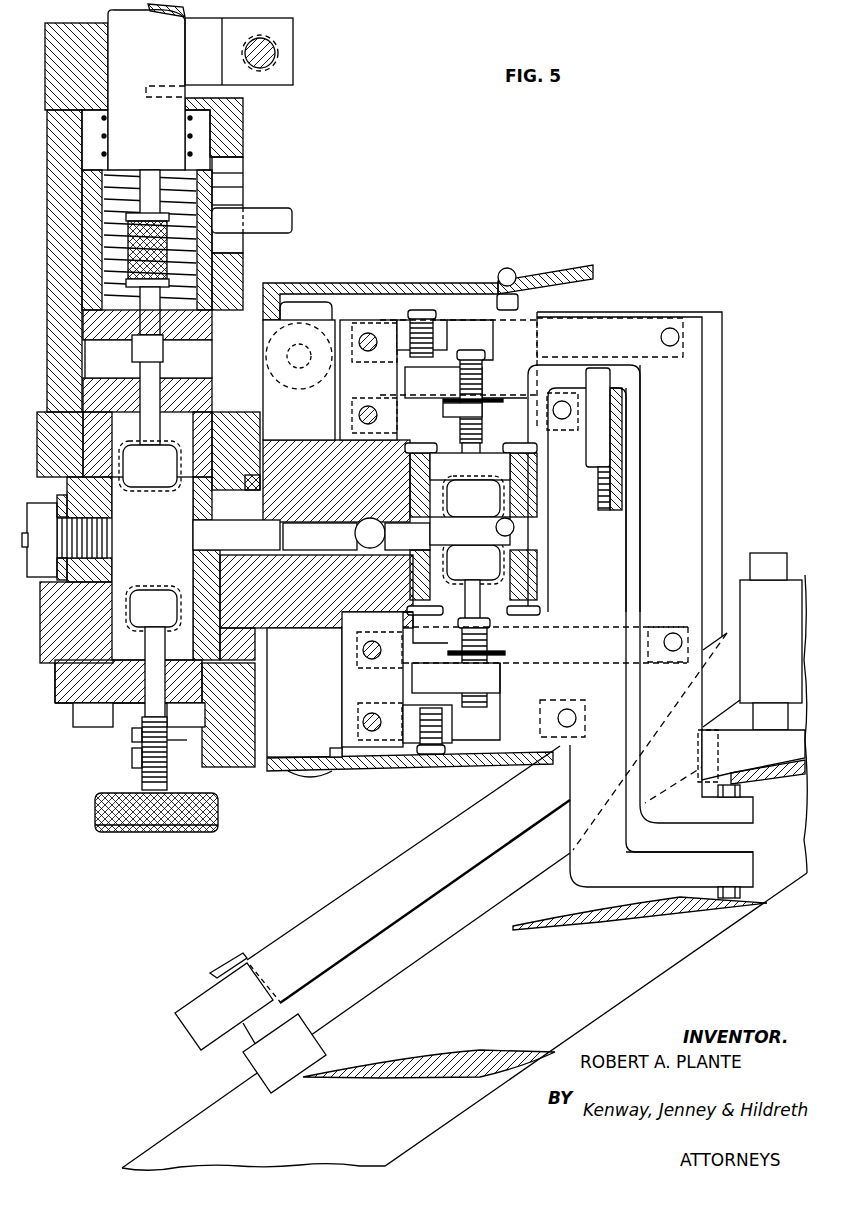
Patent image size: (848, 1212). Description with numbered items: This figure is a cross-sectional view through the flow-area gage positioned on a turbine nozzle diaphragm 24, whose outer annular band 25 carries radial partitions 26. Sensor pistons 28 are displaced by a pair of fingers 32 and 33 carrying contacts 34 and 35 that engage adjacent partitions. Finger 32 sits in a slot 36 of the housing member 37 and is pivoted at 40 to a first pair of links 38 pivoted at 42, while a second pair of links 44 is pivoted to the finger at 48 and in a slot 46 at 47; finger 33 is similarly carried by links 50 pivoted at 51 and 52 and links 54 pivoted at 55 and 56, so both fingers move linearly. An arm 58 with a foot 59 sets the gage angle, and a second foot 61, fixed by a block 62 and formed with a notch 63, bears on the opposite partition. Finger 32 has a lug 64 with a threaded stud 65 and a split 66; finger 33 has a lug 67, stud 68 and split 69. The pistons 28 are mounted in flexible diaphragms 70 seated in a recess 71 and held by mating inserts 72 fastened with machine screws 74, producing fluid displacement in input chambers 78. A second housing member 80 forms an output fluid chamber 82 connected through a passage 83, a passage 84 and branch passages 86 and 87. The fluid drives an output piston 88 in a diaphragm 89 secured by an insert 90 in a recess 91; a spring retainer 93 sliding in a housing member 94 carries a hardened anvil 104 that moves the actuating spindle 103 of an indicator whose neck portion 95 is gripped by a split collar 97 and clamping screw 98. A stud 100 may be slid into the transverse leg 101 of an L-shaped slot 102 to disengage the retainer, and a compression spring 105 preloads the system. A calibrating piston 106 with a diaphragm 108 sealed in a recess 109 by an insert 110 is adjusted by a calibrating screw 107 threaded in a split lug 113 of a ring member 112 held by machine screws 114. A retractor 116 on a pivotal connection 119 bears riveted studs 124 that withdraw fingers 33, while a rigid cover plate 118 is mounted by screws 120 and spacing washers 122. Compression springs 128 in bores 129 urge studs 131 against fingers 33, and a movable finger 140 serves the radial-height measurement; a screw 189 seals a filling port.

The turbine nozzle diaphragm 24 is at (176, 1120).
The outer annular band 25 is at (415, 1128).
The radial partitions 26 is at (767, 800).
The sensor pistons 28 is at (487, 507).
The finger 32 is at (608, 815).
The finger 33 is at (682, 765).
The contact 34 is at (740, 890).
The contact 35 is at (740, 790).
The slot 36 is at (360, 612).
The housing member 37 is at (305, 612).
The first pair of links 38 is at (585, 700).
The pivot 40 is at (569, 709).
The pivot 42 is at (365, 712).
The second pair of links 44 is at (548, 430).
The slot 46 is at (350, 450).
The pivot 47 is at (370, 406).
The pivot 48 is at (562, 419).
The pair of links 50 is at (652, 626).
The pivot 51 is at (368, 660).
The pivot 52 is at (673, 632).
The second pairs of links 54 is at (652, 357).
The pivot 55 is at (368, 351).
The pivot 56 is at (661, 337).
The arm 58 is at (408, 892).
The foot 59 is at (245, 1073).
The second foot 61 is at (782, 756).
The block 62 is at (782, 671).
The notch 63 is at (730, 746).
The lug 64 is at (449, 687).
The stud 65 is at (462, 640).
The split 66 is at (448, 653).
The lug 67 is at (440, 386).
The stud 68 is at (458, 425).
The split 69 is at (445, 402).
The flexible diaphragms 70 is at (538, 481).
The recess 71 is at (412, 580).
The mating inserts 72 is at (520, 498).
The machine screws 74 is at (480, 614).
The input chambers 78 is at (487, 539).
The second housing member 80 is at (70, 628).
The output fluid chamber 82 is at (154, 557).
The passage 83 is at (247, 544).
The passage 84 is at (328, 544).
The branch passage 86 is at (407, 536).
The branch passage 87 is at (380, 542).
The output piston 88 is at (163, 471).
The flexible diaphragm 89 is at (143, 487).
The insert 90 is at (174, 360).
The recess 91 is at (212, 440).
The spring retainer 93 is at (228, 279).
The housing member 94 is at (244, 120).
The neck portion 95 is at (186, 56).
The split collar 97 is at (293, 30).
The clamping screw 98 is at (275, 53).
The stud 100 is at (292, 220).
The transverse leg 101 is at (225, 172).
The L-shaped slot 102 is at (222, 190).
The actuating spindle 103 is at (200, 252).
The hardened anvil 104 is at (132, 352).
The compression spring 105 is at (215, 200).
The calibrating piston 106 is at (168, 618).
The calibrating screw 107 is at (96, 808).
The flexible diaphragm 108 is at (131, 586).
The recess 109 is at (213, 644).
The insert 110 is at (118, 710).
The ring member 112 is at (56, 703).
The split lug 113 is at (132, 755).
The machine screws 114 is at (88, 722).
The retractor 116 is at (565, 272).
The rigid cover plate 118 is at (380, 765).
The pivotal connection 119 is at (306, 340).
The screws 120 is at (296, 775).
The spacing washers 122 is at (340, 758).
The riveted studs 124 is at (520, 300).
The compression springs 128 is at (612, 482).
The bore 129 is at (615, 498).
The stud 131 is at (586, 380).
The movable finger 140 is at (745, 842).
The screw 189 is at (108, 528).